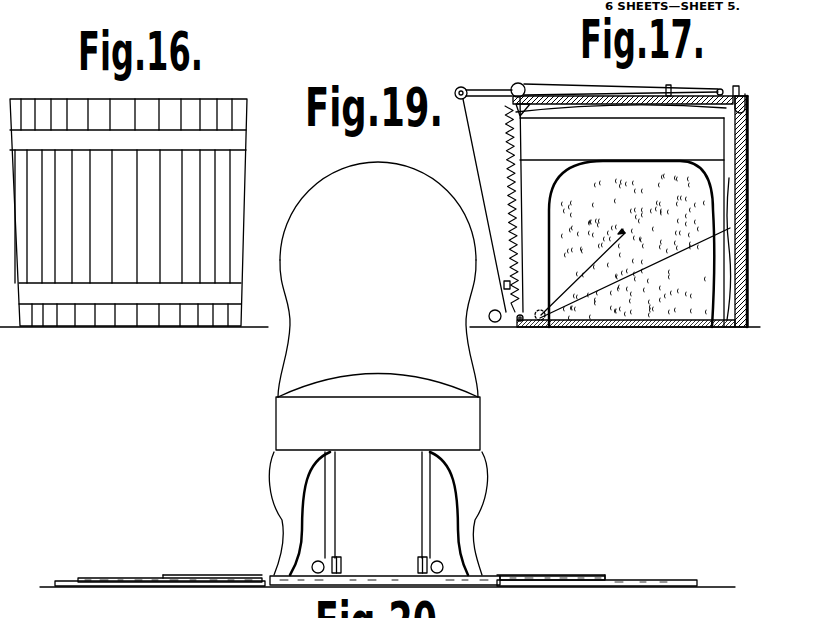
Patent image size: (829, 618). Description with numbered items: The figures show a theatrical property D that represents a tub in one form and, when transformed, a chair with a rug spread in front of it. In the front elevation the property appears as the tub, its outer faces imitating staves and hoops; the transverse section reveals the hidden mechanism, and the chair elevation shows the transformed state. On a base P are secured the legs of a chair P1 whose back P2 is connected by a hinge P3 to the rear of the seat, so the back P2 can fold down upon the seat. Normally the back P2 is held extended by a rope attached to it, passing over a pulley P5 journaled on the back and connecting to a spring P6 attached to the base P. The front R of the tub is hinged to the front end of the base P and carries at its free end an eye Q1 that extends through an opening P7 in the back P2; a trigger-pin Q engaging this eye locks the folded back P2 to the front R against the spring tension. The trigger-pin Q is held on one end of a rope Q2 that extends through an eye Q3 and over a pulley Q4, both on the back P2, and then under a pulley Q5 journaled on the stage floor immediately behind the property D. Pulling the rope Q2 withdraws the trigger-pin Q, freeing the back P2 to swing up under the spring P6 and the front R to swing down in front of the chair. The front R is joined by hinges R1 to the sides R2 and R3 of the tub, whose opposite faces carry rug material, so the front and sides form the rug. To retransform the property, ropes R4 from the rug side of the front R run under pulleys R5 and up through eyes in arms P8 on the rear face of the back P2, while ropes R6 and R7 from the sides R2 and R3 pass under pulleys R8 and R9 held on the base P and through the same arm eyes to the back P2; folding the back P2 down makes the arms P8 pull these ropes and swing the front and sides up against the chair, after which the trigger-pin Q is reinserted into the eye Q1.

In FIG. 16, the theatrical property D is at (128, 193).
In FIG. 17, the theatrical property D is at (633, 173).
In FIG. 19, the theatrical property D is at (232, 406).
In FIG. 16, the front of the tub R is at (128, 330).
In FIG. 17, the front of the tub R is at (748, 172).
In FIG. 19, the front of the tub R is at (297, 589).
In FIG. 19, the hinges R1 is at (262, 589).
In FIG. 19, the side of the tub R2 is at (185, 589).
In FIG. 19, the side of the tub R3 is at (643, 589).
In FIG. 17, the ropes R4 is at (488, 178).
In FIG. 19, the ropes R4 is at (337, 500).
In FIG. 19, the pulleys R5 is at (342, 565).
In FIG. 17, the rope R6 is at (540, 321).
In FIG. 19, the rope R6 is at (278, 577).
In FIG. 17, the rope R7 is at (642, 273).
In FIG. 19, the rope R7 is at (523, 573).
In FIG. 19, the pulley R8 is at (318, 561).
In FIG. 19, the pulley R9 is at (437, 561).
In FIG. 17, the base P is at (633, 330).
In FIG. 17, the chair P1 is at (650, 157).
In FIG. 19, the chair P1 is at (480, 440).
In FIG. 17, the back P2 is at (688, 93).
In FIG. 19, the back P2 is at (378, 279).
In FIG. 17, the hinge P3 is at (522, 108).
In FIG. 17, the pulley P5 is at (556, 86).
In FIG. 17, the spring P6 is at (504, 108).
In FIG. 17, the opening P7 is at (735, 102).
In FIG. 17, the arms P8 is at (475, 87).
In FIG. 17, the trigger-pin Q is at (736, 86).
In FIG. 17, the eye Q1 is at (741, 95).
In FIG. 17, the rope Q2 is at (719, 89).
In FIG. 17, the eye Q3 is at (668, 88).
In FIG. 17, the pulley Q4 is at (518, 83).
In FIG. 17, the pulley Q5 is at (495, 323).